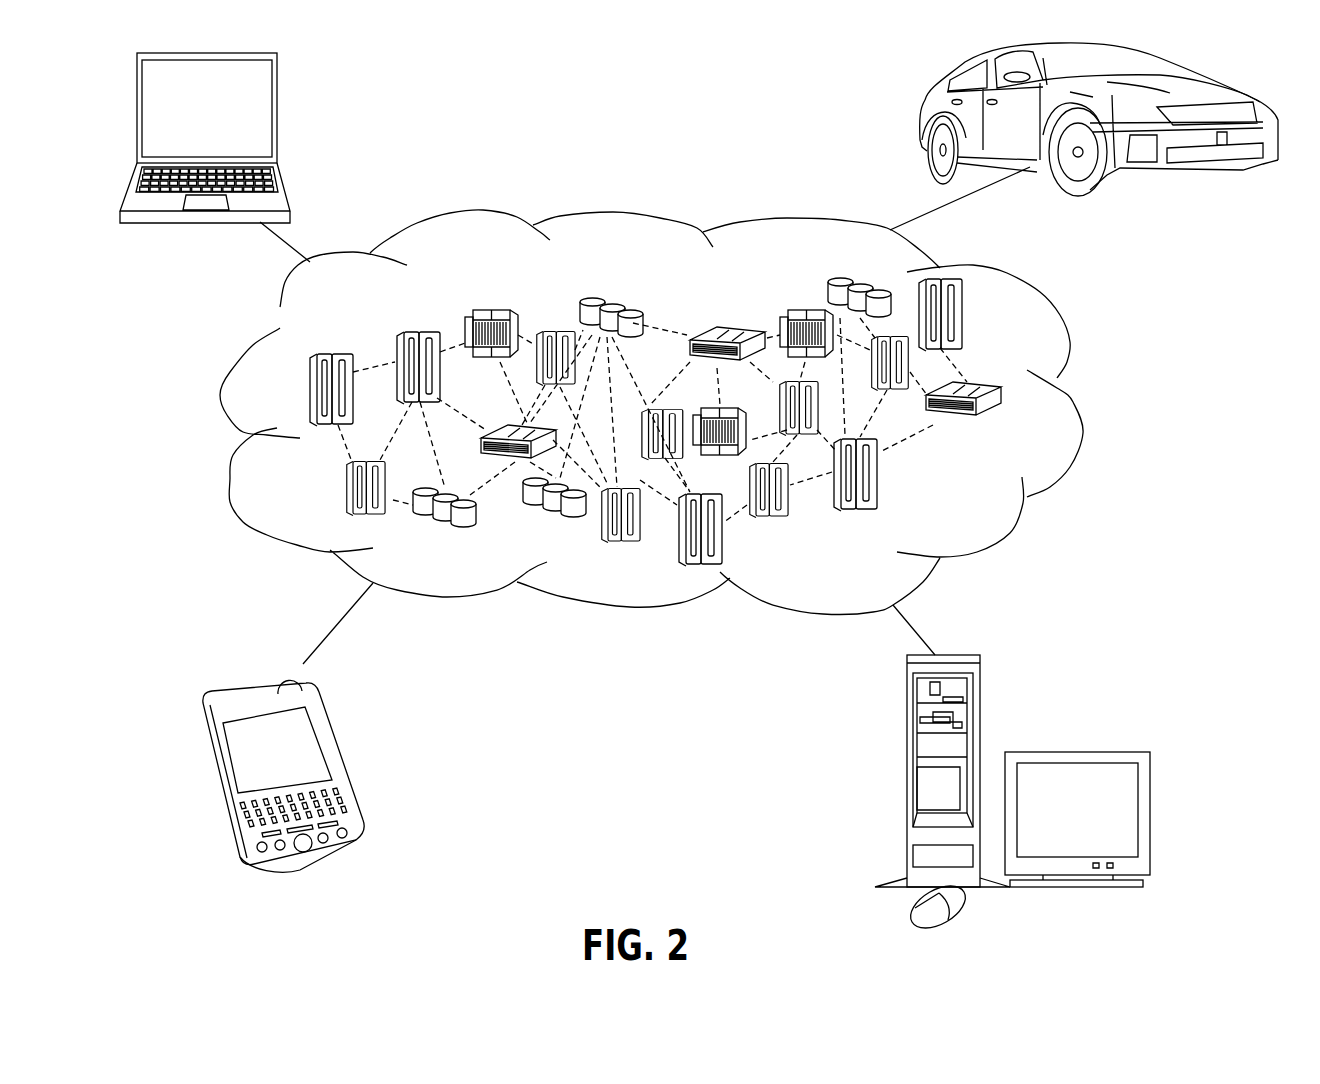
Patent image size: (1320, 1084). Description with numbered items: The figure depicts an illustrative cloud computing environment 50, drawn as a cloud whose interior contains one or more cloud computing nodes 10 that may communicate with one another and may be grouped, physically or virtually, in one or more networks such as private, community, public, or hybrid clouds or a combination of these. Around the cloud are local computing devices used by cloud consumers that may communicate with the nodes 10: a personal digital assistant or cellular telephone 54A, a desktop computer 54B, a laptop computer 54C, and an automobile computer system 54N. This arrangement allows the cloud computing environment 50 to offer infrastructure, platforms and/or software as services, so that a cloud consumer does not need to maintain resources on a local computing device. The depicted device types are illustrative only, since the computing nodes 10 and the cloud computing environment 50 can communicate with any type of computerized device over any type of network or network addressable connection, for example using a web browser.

The cloud computing node 10 is at (984, 501).
The cloud computing environment 50 is at (1073, 402).
The personal digital assistant or cellular telephone 54A is at (330, 733).
The desktop computer 54B is at (906, 718).
The laptop computer 54C is at (278, 92).
The automobile computer system 54N is at (921, 112).